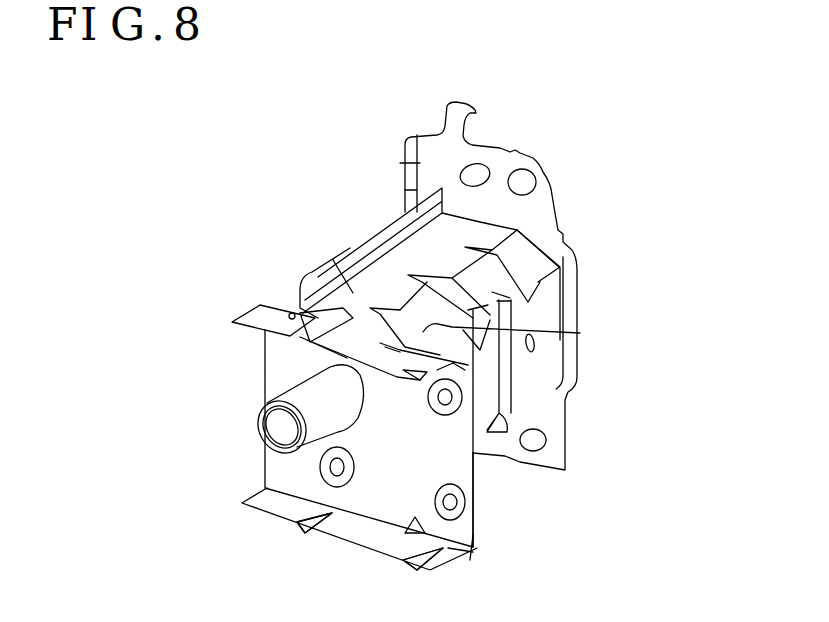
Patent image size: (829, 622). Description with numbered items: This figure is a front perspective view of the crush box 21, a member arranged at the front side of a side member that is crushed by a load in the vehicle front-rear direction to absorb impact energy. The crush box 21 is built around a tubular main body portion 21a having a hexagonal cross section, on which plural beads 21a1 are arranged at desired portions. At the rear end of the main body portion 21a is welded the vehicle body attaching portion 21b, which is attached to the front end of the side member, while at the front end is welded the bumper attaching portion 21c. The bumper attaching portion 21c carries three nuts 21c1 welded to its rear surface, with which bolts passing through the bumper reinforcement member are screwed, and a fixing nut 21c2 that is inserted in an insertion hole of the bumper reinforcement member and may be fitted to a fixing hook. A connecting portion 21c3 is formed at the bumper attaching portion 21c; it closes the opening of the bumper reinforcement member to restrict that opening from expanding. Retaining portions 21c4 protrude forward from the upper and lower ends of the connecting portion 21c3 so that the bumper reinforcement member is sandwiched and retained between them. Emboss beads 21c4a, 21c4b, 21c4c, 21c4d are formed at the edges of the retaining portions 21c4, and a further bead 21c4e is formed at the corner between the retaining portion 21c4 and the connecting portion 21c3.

The crush box 21 is at (353, 293).
The main body portion 21a is at (320, 275).
The beads 21a1 is at (505, 330).
The vehicle body attaching portion 21b is at (406, 160).
The bumper attaching portion 21c is at (267, 363).
The nuts 21c1 is at (432, 410).
The fixing nut 21c2 is at (258, 420).
The connecting portion 21c3 is at (463, 472).
The retaining portions 21c4 is at (245, 312).
The emboss bead 21c4a is at (290, 313).
The emboss bead 21c4b is at (430, 376).
The emboss bead 21c4c is at (310, 533).
The emboss bead 21c4d is at (417, 572).
The bead 21c4e is at (475, 535).